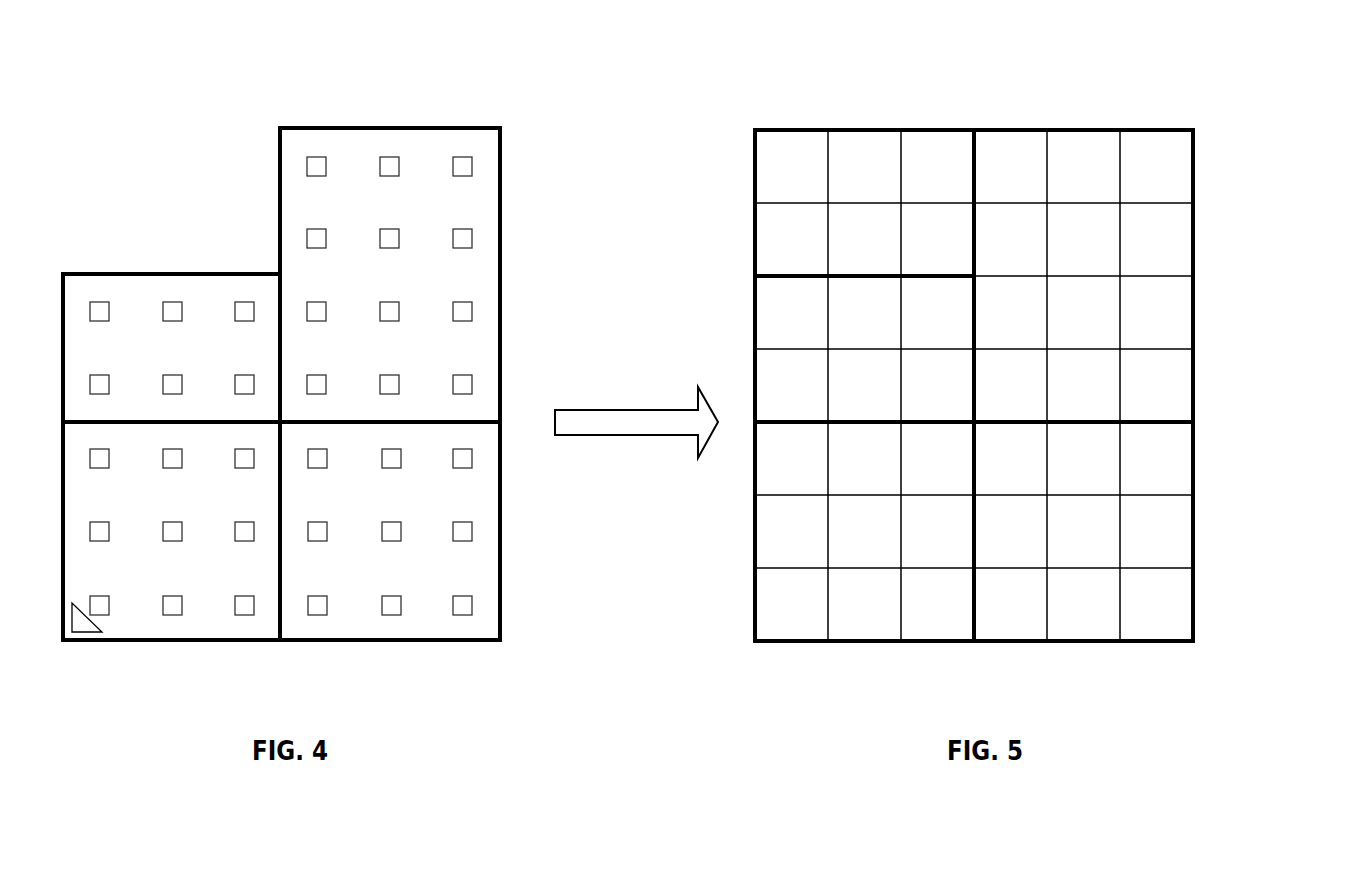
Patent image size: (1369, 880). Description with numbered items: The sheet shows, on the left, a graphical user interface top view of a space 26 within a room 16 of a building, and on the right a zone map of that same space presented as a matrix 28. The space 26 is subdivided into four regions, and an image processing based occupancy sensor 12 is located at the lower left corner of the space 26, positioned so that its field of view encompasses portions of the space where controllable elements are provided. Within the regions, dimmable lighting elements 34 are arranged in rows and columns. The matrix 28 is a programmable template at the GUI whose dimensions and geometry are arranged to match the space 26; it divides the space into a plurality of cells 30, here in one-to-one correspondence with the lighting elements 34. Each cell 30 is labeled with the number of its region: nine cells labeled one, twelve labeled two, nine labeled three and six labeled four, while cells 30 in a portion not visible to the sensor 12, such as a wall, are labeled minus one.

In FIG. 4, the image processing based occupancy sensor 12 is at (72, 640).
In FIG. 4, the room 16 is at (430, 105).
In FIG. 4, the space 26 is at (320, 105).
In FIG. 5, the matrix 28 is at (1236, 206).
In FIG. 5, the cells 30 is at (937, 130).
In FIG. 4, the dimmable lighting elements 34 is at (100, 300).